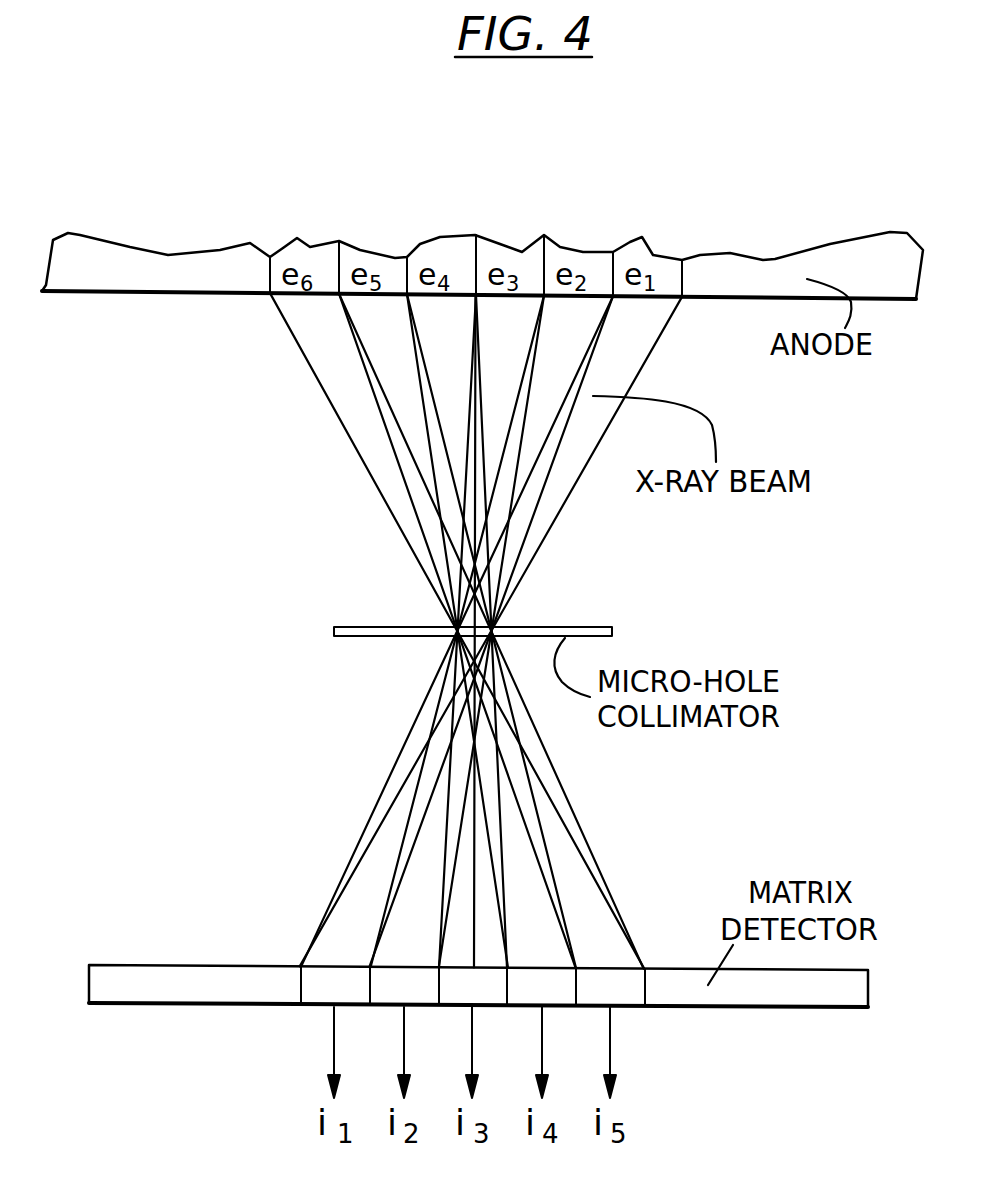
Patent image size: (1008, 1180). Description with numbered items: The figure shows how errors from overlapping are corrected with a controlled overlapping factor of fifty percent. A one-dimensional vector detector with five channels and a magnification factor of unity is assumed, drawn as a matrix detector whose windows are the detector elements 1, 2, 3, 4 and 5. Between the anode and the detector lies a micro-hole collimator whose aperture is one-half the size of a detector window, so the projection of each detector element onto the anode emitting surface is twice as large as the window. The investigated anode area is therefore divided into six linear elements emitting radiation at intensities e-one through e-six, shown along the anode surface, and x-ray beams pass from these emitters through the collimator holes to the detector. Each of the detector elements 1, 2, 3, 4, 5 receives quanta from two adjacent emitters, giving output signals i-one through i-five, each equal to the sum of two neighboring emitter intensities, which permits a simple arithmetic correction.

The detector element 1 is at (335, 986).
The detector element 2 is at (404, 987).
The detector element 3 is at (473, 987).
The detector element 4 is at (541, 987).
The detector element 5 is at (610, 987).